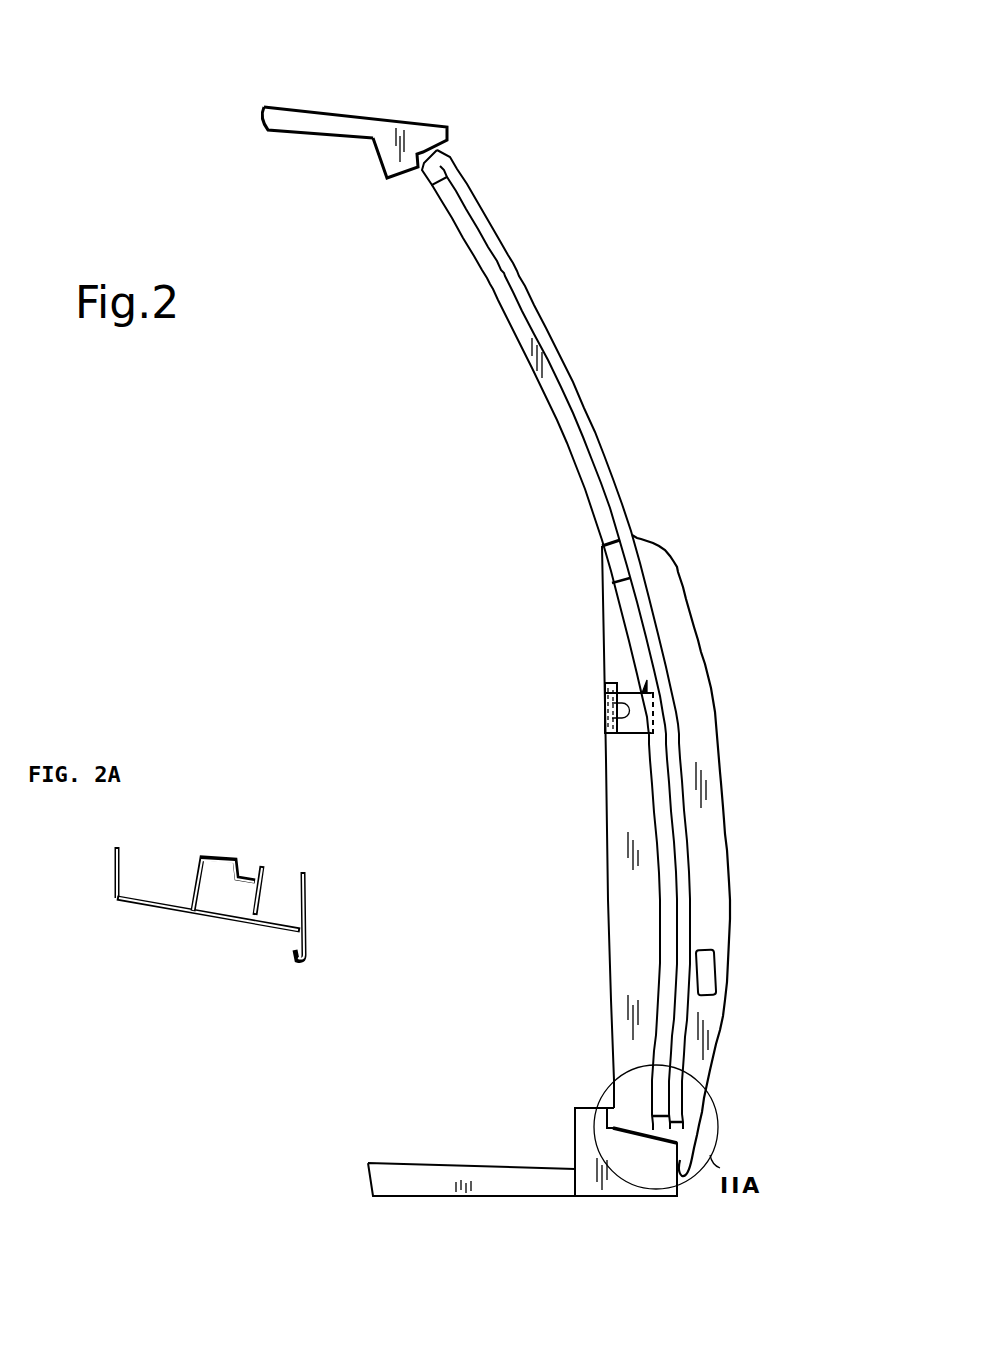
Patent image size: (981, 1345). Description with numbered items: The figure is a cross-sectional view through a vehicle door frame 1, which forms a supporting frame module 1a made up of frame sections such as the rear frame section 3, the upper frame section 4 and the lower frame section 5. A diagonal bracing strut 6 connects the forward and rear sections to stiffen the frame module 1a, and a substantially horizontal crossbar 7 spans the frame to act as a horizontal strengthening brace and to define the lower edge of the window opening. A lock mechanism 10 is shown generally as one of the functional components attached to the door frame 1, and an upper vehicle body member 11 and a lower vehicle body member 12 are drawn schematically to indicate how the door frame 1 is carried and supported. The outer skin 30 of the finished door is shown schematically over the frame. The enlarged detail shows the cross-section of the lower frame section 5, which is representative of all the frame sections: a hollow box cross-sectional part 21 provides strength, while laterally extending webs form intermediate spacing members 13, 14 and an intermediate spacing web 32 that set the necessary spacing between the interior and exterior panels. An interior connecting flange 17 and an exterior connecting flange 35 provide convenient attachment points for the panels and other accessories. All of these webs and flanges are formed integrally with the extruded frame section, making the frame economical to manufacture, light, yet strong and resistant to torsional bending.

In FIG. 2, the door frame 1 is at (555, 235).
In FIG. 2, the supporting frame module 1a is at (555, 346).
In FIG. 2, the rear frame section 3 is at (503, 288).
In FIG. 2, the upper frame section 4 is at (435, 183).
In FIG. 2, the lower frame section 5 is at (657, 1122).
In FIG. 2A, the lower frame section 5 is at (254, 859).
In FIG. 2, the diagonal bracing strut 6 is at (708, 958).
In FIG. 2, the horizontal crossbar 7 is at (607, 552).
In FIG. 2, the lock mechanism 10 is at (604, 707).
In FIG. 2, the upper vehicle body member 11 is at (387, 142).
In FIG. 2, the lower vehicle body member 12 is at (585, 1157).
In FIG. 2, the intermediate spacing member 13 is at (608, 856).
In FIG. 2A, the intermediate spacing web 14 is at (147, 910).
In FIG. 2A, the interior connecting flange 17 is at (110, 882).
In FIG. 2A, the box cross-sectional part 21 is at (215, 858).
In FIG. 2, the outer skin 30 is at (722, 800).
In FIG. 2A, the intermediate spacing web 32 is at (280, 927).
In FIG. 2A, the exterior connecting flange 35 is at (307, 945).